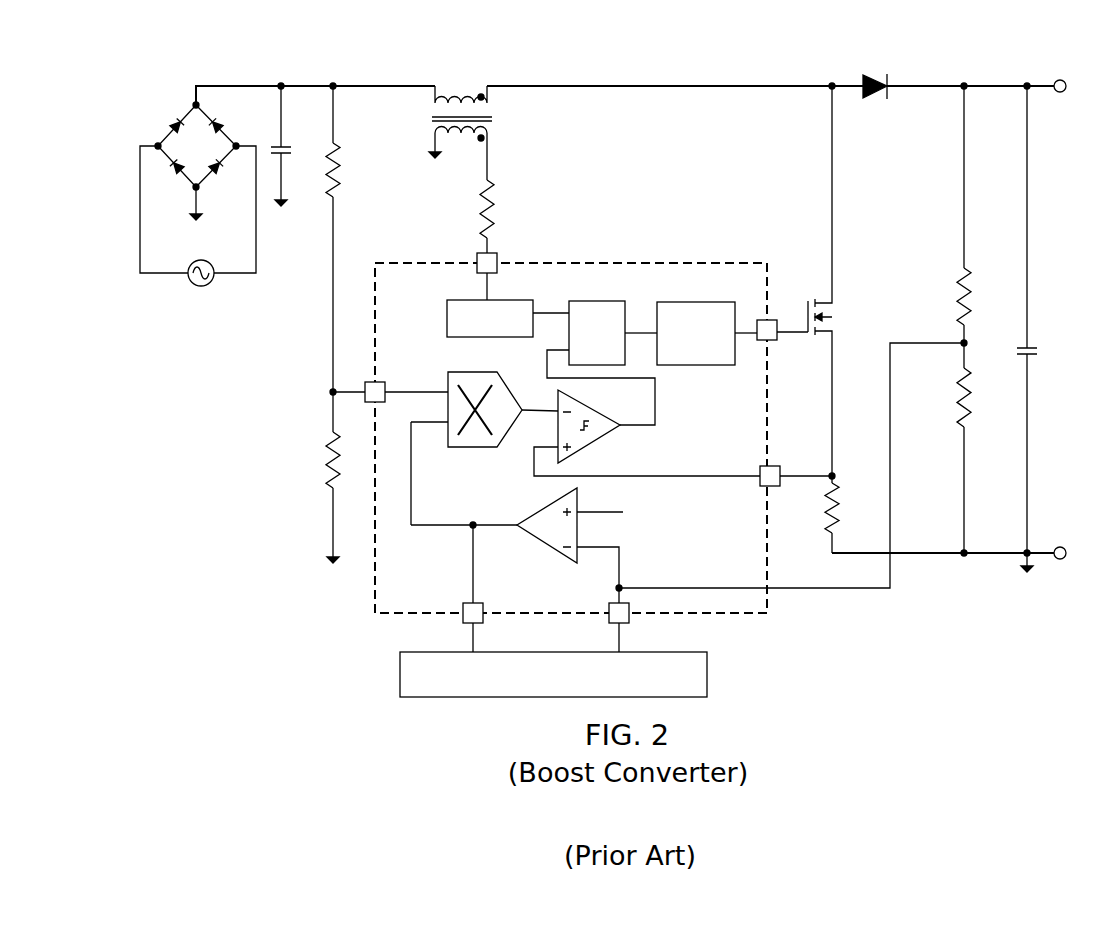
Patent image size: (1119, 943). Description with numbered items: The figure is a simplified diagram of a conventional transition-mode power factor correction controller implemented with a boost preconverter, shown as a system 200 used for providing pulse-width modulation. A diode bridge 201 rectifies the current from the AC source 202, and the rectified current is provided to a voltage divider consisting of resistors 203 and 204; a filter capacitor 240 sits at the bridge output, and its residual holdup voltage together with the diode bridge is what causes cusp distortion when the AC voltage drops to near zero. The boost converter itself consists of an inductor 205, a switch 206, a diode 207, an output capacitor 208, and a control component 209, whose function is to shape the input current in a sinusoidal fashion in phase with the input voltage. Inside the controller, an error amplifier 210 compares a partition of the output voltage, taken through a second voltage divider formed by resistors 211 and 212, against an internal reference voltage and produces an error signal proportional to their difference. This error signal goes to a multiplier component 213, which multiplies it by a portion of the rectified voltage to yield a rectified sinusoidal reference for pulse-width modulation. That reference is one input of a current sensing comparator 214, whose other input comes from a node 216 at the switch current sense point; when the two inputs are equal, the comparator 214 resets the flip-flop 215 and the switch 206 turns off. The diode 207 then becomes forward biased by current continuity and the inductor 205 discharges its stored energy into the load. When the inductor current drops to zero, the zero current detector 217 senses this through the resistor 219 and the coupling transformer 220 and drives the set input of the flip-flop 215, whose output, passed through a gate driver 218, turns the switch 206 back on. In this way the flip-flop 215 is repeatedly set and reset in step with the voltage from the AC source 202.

The system 200 is at (610, 65).
The diode bridge 201 is at (185, 110).
The AC source 202 is at (215, 278).
The resistor 203 is at (345, 152).
The resistor 204 is at (326, 470).
The inductor 205 is at (487, 97).
The switch 206 is at (838, 292).
The diode 207 is at (868, 78).
The output capacitor 208 is at (1043, 340).
The control component 209 is at (760, 618).
The error amplifier 210 is at (578, 528).
The resistor 211 is at (972, 286).
The resistor 212 is at (978, 402).
The multiplier component 213 is at (458, 372).
The comparator 214 is at (577, 390).
The flip-flop 215 is at (583, 300).
The node 216 is at (785, 460).
The zero current detector 217 is at (447, 316).
The gate driver 218 is at (697, 365).
The resistor 219 is at (498, 210).
The coupling transformer 220 is at (489, 136).
The capacitor 240 is at (283, 163).